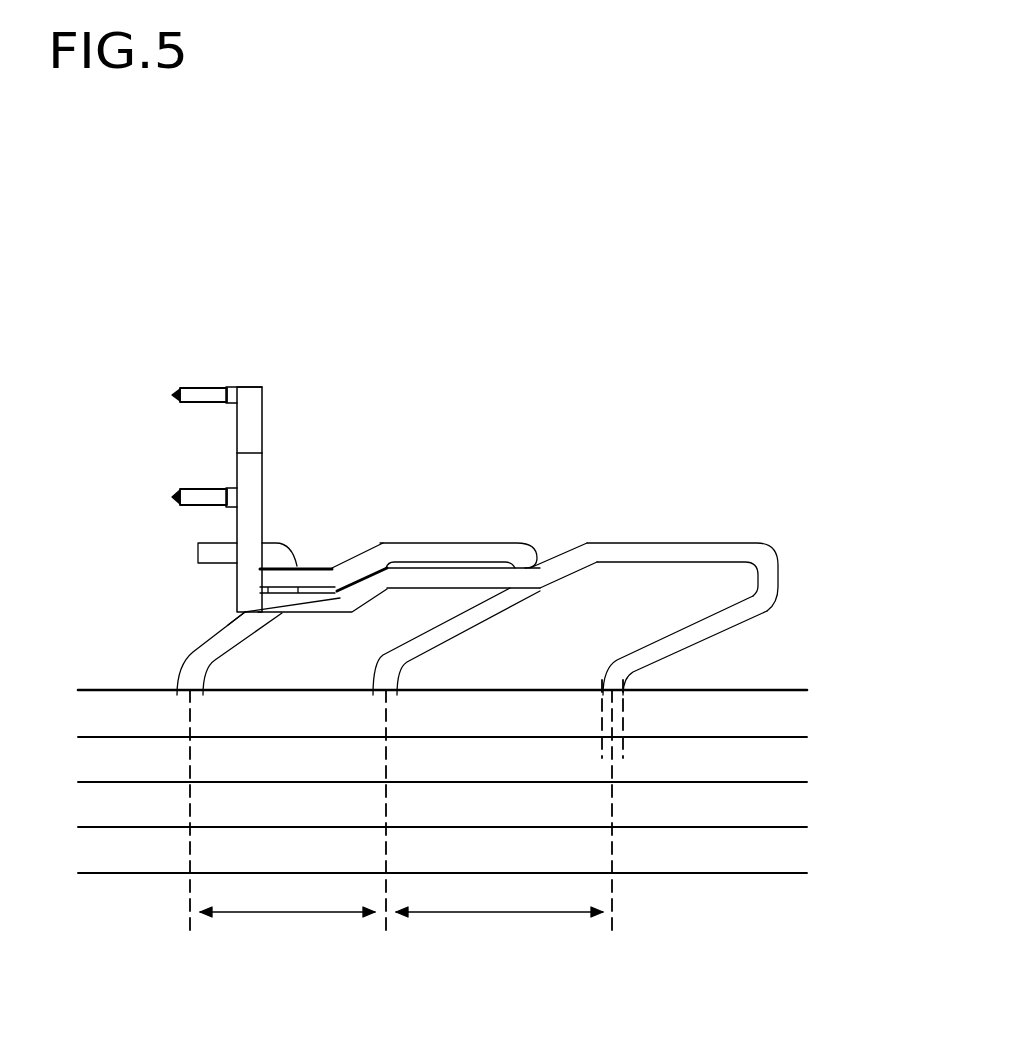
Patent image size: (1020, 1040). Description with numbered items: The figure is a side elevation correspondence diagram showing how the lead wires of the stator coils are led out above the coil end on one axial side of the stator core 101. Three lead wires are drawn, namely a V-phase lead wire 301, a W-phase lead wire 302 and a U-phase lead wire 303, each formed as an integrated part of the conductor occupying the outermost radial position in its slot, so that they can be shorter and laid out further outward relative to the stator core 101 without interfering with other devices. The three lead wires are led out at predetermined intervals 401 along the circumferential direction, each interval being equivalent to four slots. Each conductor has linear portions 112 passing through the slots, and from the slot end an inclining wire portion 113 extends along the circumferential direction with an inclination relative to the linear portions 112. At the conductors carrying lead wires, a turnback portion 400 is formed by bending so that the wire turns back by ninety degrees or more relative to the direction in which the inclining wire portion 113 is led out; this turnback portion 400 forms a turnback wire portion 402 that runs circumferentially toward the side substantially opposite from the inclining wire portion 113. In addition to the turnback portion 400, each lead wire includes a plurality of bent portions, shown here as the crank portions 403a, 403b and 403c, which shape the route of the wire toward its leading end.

The stator core 101 is at (695, 883).
The linear portions 112 is at (625, 722).
The inclining wire portion 113 is at (217, 650).
The V-phase lead wire 301 is at (297, 498).
The W-phase lead wire 302 is at (654, 476).
The U-phase lead wire 303 is at (445, 543).
The turnback portion 400 is at (470, 478).
The predetermined intervals 401 is at (401, 810).
The turnback wire portion 402 is at (217, 553).
The crank portion 403a is at (358, 557).
The crank portion 403b is at (228, 622).
The crank portion 403c is at (567, 553).